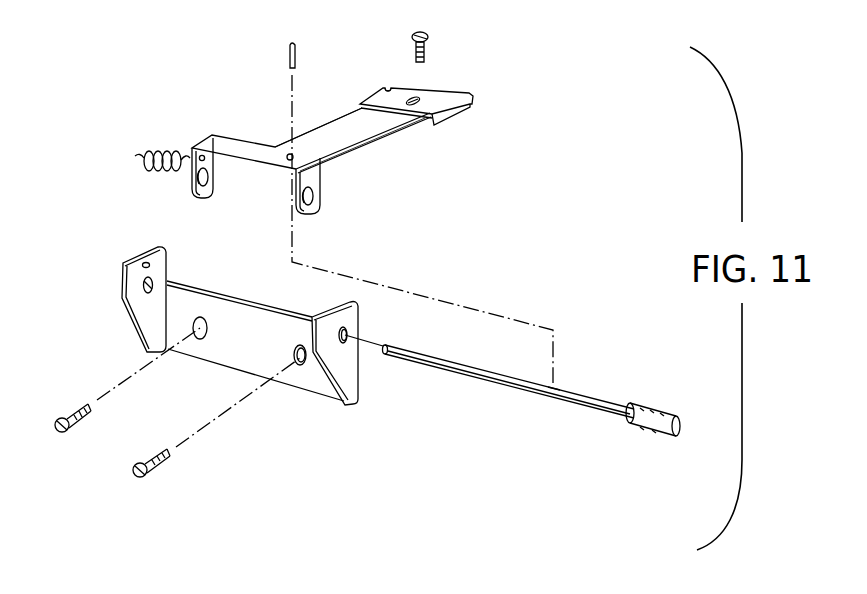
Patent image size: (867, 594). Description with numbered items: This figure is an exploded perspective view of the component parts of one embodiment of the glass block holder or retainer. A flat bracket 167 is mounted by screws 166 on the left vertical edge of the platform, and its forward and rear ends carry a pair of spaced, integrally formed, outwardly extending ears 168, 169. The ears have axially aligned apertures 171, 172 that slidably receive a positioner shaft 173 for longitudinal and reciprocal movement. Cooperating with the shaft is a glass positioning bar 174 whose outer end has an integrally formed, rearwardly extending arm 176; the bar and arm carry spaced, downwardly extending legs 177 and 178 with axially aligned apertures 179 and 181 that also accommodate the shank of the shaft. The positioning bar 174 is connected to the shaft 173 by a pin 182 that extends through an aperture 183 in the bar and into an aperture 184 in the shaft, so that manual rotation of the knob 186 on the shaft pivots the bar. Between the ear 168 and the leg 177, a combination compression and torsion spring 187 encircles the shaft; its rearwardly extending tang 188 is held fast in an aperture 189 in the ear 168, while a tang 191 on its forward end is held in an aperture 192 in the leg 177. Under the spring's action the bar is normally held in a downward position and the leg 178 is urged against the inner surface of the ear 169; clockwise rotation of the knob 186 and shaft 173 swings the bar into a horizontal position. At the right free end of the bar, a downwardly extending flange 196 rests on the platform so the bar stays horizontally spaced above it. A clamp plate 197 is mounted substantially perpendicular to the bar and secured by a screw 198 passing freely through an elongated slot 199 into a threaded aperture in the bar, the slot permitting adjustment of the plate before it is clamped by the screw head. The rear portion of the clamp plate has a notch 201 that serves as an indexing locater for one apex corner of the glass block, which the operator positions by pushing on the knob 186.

The screws 166 is at (87, 403).
The flat bracket 167 is at (310, 378).
The ear 168 is at (142, 313).
The ear 169 is at (346, 406).
The aperture 171 is at (142, 287).
The aperture 172 is at (345, 340).
The positioner shaft 173 is at (587, 401).
The glass positioning bar 174 is at (327, 128).
The arm 176 is at (232, 144).
The leg 177 is at (191, 191).
The leg 178 is at (315, 216).
The aperture 179 is at (210, 187).
The aperture 181 is at (313, 198).
The pin 182 is at (297, 44).
The aperture 183 is at (322, 158).
The aperture 184 is at (558, 388).
The knob 186 is at (673, 430).
The combination compression and torsion spring 187 is at (155, 152).
The tang 188 is at (136, 156).
The aperture 189 is at (140, 265).
The tang 191 is at (183, 153).
The aperture 192 is at (207, 161).
The flange 196 is at (472, 100).
The clamp plate 197 is at (445, 117).
The screw 198 is at (430, 39).
The elongated slot 199 is at (418, 98).
The notch 201 is at (366, 95).